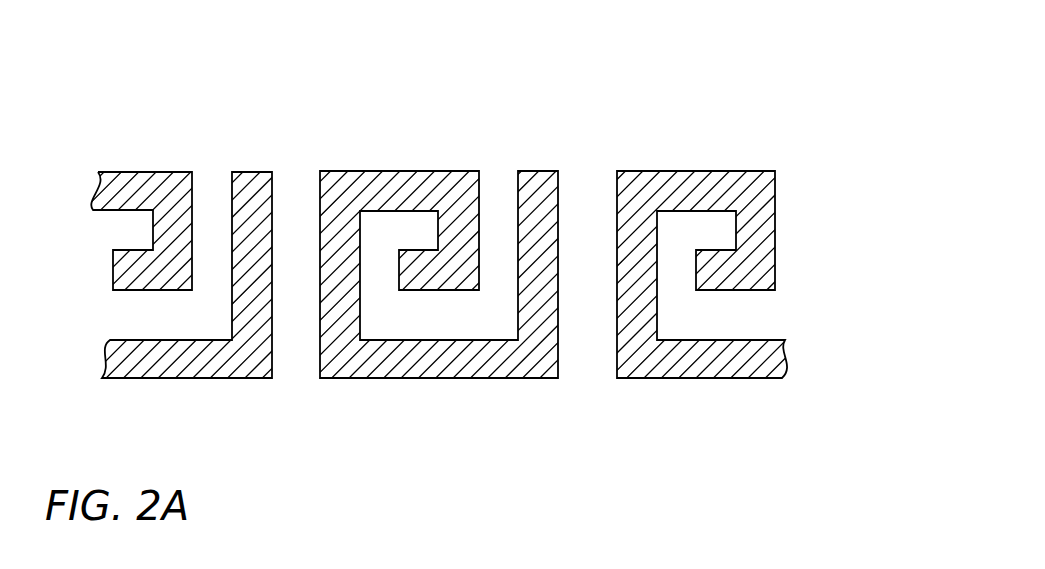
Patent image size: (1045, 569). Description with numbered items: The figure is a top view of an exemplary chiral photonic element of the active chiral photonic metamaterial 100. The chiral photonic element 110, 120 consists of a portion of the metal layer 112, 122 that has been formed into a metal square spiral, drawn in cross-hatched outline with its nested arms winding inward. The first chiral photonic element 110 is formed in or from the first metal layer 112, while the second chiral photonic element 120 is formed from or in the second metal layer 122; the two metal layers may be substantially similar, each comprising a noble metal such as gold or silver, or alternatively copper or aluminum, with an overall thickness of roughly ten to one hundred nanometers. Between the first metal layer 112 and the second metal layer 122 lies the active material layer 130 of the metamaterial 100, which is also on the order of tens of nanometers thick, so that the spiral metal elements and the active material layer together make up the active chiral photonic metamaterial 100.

The active chiral photonic metamaterial 100 is at (503, 223).
The first chiral photonic element 110 is at (503, 240).
The second chiral photonic element 120 is at (430, 170).
The first metal layer 112 is at (503, 234).
The second metal layer 122 is at (253, 141).
The active material layer 130 is at (562, 423).